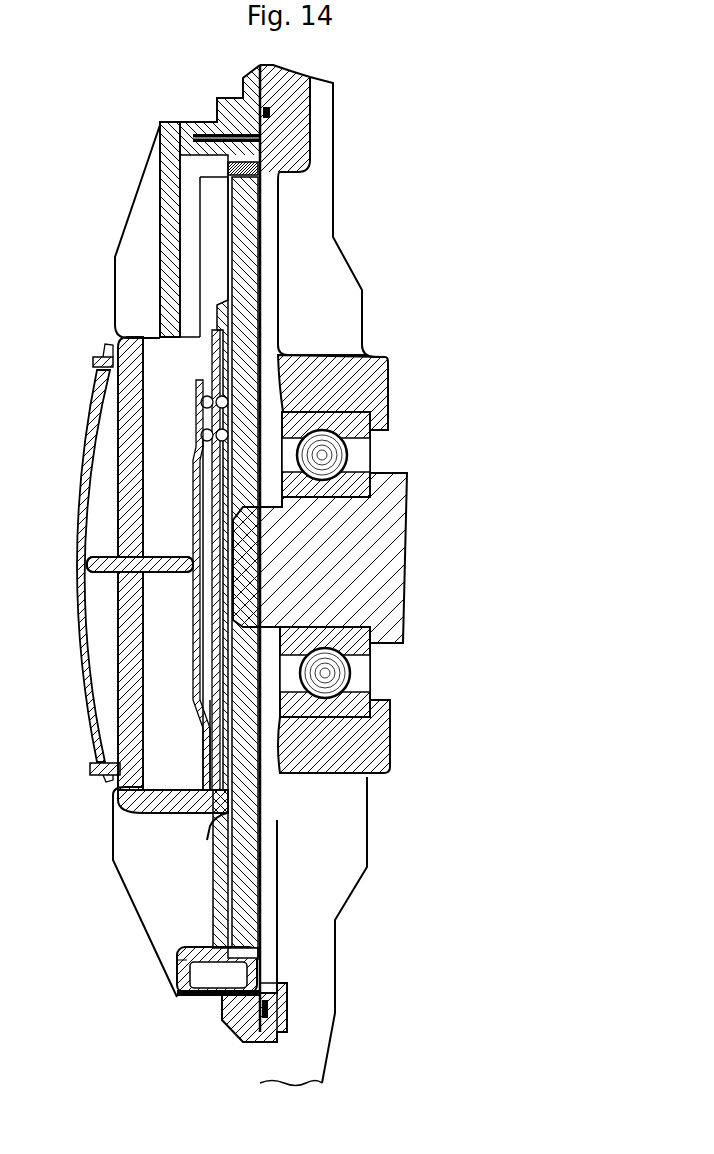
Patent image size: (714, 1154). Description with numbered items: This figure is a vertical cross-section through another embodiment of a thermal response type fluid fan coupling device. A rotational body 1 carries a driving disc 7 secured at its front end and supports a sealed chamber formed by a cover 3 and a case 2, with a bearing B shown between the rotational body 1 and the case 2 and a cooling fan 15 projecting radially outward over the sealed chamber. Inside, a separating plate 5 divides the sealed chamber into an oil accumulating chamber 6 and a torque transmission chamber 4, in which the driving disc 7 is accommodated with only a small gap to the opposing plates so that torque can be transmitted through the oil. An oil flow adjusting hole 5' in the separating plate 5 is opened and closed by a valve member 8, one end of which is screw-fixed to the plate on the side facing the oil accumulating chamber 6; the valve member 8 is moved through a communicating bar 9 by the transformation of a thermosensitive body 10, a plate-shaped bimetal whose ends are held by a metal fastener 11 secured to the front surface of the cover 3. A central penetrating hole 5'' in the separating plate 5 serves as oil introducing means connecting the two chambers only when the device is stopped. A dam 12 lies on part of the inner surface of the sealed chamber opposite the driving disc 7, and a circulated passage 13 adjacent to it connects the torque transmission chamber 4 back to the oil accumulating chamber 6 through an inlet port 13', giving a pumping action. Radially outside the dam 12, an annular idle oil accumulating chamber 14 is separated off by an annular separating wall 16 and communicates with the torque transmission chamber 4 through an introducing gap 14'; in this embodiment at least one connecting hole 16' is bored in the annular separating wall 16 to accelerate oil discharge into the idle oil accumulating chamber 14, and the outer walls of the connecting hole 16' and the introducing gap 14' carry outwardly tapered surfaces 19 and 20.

The rotational body 1 is at (380, 544).
The case 2 is at (378, 379).
The cover 3 is at (137, 800).
The torque transmission chamber 4 is at (255, 297).
The separating plate 5 is at (136, 560).
The oil flow adjusting hole 5' is at (190, 745).
The penetrating hole 5'' is at (187, 615).
The oil accumulating chamber 6 is at (157, 452).
The driving disc 7 is at (245, 228).
The valve member 8 is at (198, 668).
The communicating bar 9 is at (115, 562).
The thermosensitive body 10 is at (80, 512).
The metal fastener 11 is at (95, 359).
The dam 12 is at (265, 178).
The circulated passage 13 is at (134, 229).
The inlet port 13' is at (176, 201).
The idle oil accumulating chamber 14 is at (204, 549).
The introducing gap 14' is at (292, 934).
The cooling fan 15 is at (135, 286).
The annular separating wall 16 is at (253, 976).
The connecting hole 16' is at (190, 936).
The tapered surface 19 is at (221, 972).
The tapered surface 20 is at (242, 960).
The ball bearing B is at (345, 455).